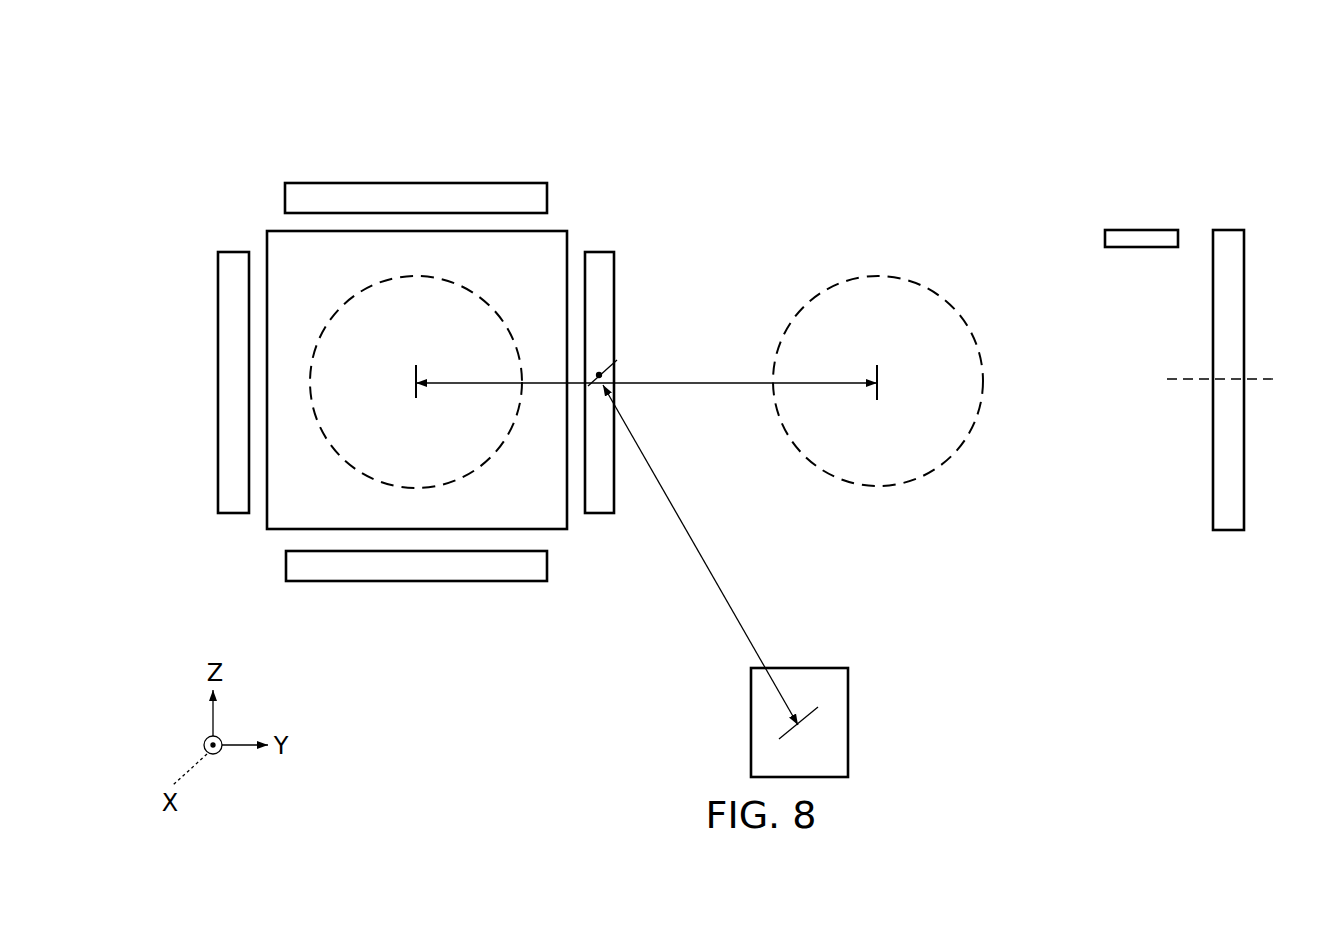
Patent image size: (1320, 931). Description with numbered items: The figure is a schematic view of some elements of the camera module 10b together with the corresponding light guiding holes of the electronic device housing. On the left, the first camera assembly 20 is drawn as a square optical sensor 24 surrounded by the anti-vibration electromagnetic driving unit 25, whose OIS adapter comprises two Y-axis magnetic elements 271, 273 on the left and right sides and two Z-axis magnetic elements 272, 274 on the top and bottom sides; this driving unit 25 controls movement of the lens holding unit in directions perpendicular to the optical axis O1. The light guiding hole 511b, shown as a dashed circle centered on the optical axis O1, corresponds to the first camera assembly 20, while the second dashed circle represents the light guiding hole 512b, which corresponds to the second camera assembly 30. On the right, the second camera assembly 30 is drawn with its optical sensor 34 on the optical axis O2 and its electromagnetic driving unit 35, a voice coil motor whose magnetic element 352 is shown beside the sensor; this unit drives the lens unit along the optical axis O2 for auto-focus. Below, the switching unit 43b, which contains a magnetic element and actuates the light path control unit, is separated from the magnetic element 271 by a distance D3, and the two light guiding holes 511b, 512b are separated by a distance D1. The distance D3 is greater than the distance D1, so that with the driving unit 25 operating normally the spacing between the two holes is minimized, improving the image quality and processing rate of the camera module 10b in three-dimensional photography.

The camera module 10b is at (247, 125).
The first camera assembly 20 is at (260, 210).
The optical sensor 24 is at (553, 228).
The anti-vibration electromagnetic driving unit 25 is at (553, 152).
The Y-axis magnetic element 271 is at (614, 297).
The Z-axis magnetic element 272 is at (495, 183).
The Y-axis magnetic element 273 is at (233, 252).
The Z-axis magnetic element 274 is at (416, 581).
The light guiding hole 511b is at (413, 275).
The light guiding hole 512b is at (878, 275).
The second camera assembly 30 is at (1194, 150).
The optical sensor 34 is at (1229, 230).
The electromagnetic driving unit 35 is at (1098, 214).
The magnetic element 352 is at (1139, 230).
The switching unit 43b is at (848, 722).
The optical axis O1 is at (413, 385).
The optical axis O2 is at (1243, 380).
The distance D1 is at (670, 385).
The distance D3 is at (710, 567).